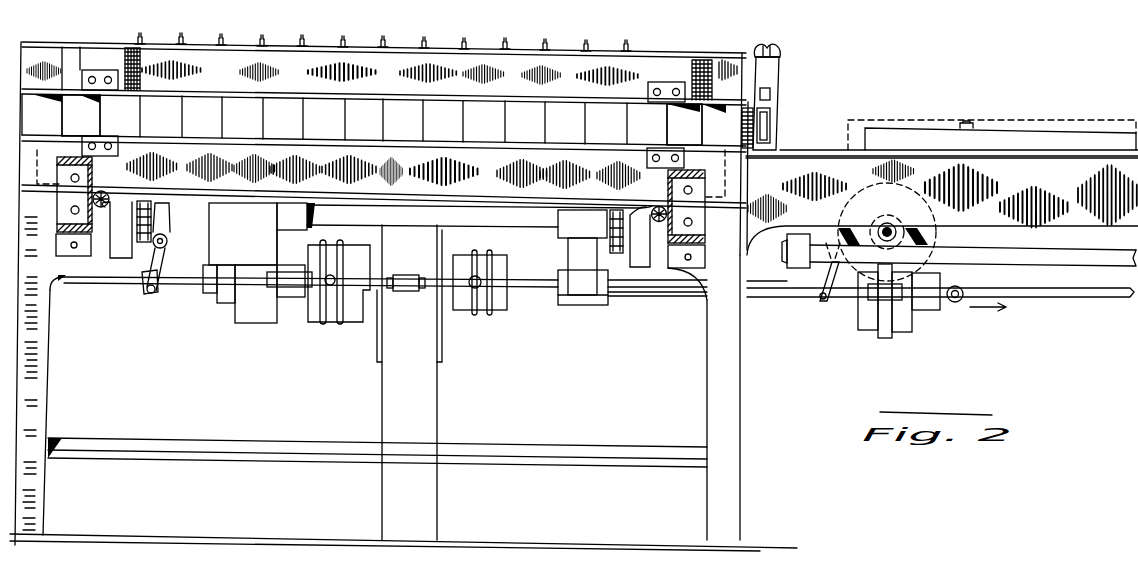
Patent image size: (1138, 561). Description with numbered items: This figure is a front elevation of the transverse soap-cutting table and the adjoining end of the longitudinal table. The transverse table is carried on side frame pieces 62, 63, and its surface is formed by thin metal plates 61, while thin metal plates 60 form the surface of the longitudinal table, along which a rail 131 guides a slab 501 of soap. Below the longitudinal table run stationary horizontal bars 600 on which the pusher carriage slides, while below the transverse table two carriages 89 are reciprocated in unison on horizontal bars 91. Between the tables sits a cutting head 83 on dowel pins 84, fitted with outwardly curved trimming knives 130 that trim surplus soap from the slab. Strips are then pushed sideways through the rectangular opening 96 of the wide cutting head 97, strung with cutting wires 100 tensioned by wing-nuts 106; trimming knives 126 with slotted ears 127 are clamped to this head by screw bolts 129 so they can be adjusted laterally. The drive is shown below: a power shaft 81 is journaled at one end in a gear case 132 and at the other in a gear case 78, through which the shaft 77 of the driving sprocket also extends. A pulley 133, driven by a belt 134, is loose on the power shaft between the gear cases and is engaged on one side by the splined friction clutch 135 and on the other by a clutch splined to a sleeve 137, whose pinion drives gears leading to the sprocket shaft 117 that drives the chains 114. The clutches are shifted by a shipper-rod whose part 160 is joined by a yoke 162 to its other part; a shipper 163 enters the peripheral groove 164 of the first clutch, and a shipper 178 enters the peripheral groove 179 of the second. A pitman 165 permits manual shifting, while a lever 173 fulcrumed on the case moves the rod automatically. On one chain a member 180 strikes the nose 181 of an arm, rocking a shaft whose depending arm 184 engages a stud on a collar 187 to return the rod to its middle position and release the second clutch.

The thin metal plates 60 is at (1000, 150).
The thin metal plates 61 is at (362, 140).
The side frame piece 62 is at (740, 372).
The side frame piece 63 is at (42, 367).
The shaft 77 is at (888, 232).
The gear case 78 is at (903, 325).
The power shaft 81 is at (687, 297).
The cutting head 83 is at (777, 92).
The dowel pins 84 is at (771, 133).
The carriages 89 is at (120, 240).
The horizontal bars 91 is at (57, 202).
The rectangular opening 96 is at (205, 97).
The wide cutting head 97 is at (568, 80).
The cutting wires 100 is at (548, 123).
The wing-nuts 106 is at (138, 35).
The conveyer chains 114 is at (612, 220).
The sprocket shaft 117 is at (415, 218).
The trimming knives 126 is at (92, 112).
The ears 127 is at (100, 70).
The screw bolts 129 is at (658, 85).
The trimming knives 130 is at (757, 130).
The rail 131 is at (1088, 128).
The gear case 132 is at (261, 315).
The pulley 133 is at (443, 355).
The belt 134 is at (386, 408).
The friction clutch 135 is at (466, 311).
The sleeve 137 is at (292, 320).
The shipper-rod part 160 is at (640, 290).
The yoke 162 is at (428, 291).
The shipper 163 is at (492, 311).
The peripheral groove 164 is at (478, 251).
The pitman 165 is at (1075, 299).
The lever 173 is at (822, 301).
The shipper 178 is at (325, 292).
The peripheral groove 179 is at (343, 320).
The member 180 is at (168, 229).
The nose 181 is at (160, 210).
The depending arm 184 is at (164, 258).
The collar 187 is at (139, 285).
The slab 501 is at (903, 120).
The horizontal bars 600 is at (1077, 250).